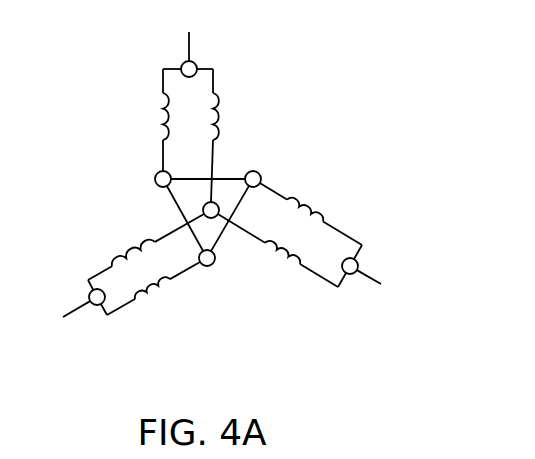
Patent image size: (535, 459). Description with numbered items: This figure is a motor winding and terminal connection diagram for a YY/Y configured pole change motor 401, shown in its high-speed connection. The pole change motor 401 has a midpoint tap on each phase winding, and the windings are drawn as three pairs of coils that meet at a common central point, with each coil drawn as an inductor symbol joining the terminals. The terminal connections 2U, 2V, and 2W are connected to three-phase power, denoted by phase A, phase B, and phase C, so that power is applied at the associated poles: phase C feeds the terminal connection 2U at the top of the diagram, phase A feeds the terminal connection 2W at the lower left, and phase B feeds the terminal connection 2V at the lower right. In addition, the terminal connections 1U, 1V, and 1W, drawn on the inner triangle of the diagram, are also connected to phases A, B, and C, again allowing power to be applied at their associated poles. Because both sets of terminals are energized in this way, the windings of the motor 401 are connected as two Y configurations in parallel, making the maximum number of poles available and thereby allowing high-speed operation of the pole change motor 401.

The pole change motor 401 is at (224, 170).
The terminal connection 2U is at (203, 62).
The terminal connection 1W is at (149, 178).
The terminal connection 1V is at (265, 178).
The terminal connection 1U is at (207, 271).
The terminal connection 2W is at (84, 285).
The terminal connection 2V is at (349, 283).
The phase A is at (70, 315).
The phase B is at (377, 287).
The phase C is at (189, 36).